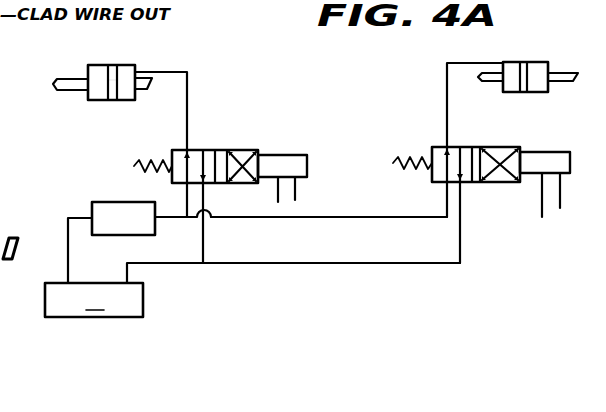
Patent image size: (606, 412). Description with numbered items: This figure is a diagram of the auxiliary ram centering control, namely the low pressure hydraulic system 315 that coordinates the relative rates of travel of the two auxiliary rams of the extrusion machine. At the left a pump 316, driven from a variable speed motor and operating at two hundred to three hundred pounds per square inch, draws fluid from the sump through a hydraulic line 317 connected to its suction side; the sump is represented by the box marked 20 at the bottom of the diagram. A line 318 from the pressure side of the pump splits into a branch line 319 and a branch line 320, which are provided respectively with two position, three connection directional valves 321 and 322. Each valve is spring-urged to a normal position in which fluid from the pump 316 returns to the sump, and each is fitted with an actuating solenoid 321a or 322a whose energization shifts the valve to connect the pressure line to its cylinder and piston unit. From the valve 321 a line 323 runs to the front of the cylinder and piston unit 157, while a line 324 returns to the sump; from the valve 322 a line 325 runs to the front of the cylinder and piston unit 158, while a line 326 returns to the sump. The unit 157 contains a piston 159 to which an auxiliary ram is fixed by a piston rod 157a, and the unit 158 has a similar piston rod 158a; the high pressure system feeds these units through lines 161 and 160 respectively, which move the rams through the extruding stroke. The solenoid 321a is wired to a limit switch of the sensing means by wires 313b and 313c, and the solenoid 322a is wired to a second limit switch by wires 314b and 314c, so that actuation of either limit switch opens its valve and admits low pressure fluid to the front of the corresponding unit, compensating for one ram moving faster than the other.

The controller 20 is at (252, 290).
The cylinder and piston unit 157 is at (130, 68).
The piston rod 157a is at (148, 91).
The cylinder and piston unit 158 is at (542, 50).
The piston rod 158a is at (493, 82).
The piston 159 is at (109, 100).
The high pressure hydraulic line 160 is at (568, 82).
The high pressure hydraulic line 161 is at (72, 91).
The wire 313b is at (278, 200).
The wire 313c is at (296, 196).
The wire 314b is at (542, 205).
The wire 314c is at (558, 210).
The low pressure hydraulic system 315 is at (86, 158).
The pump 316 is at (110, 202).
The hydraulic line 317 is at (68, 248).
The line 318 is at (177, 218).
The branch line 319 is at (183, 188).
The branch line 320 is at (310, 217).
The directional valve 321 is at (212, 148).
The actuating solenoid 321a is at (287, 157).
The directional valve 322 is at (472, 147).
The actuating solenoid 322a is at (556, 142).
The line 323 is at (190, 85).
The line 324 is at (206, 231).
The line 325 is at (447, 83).
The line 326 is at (460, 237).